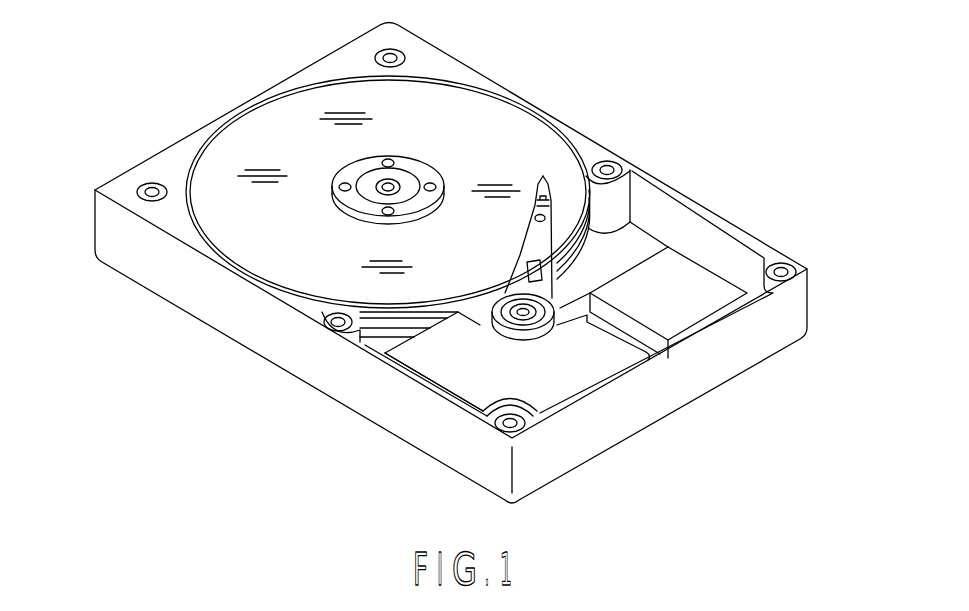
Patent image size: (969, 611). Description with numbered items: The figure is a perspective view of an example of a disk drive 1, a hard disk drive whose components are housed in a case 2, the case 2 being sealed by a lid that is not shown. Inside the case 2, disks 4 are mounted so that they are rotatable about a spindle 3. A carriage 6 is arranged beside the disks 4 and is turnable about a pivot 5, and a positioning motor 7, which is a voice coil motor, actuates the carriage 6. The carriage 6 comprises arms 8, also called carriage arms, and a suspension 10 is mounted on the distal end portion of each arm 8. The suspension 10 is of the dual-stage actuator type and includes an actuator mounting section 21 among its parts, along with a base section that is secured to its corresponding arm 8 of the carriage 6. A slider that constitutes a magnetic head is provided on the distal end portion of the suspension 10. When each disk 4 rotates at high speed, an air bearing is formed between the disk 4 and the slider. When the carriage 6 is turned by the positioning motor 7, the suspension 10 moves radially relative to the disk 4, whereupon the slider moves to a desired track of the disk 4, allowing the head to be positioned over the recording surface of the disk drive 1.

The disk drive 1 is at (707, 98).
The case 2 is at (270, 350).
The spindle 3 is at (400, 175).
The disk 4 is at (490, 123).
The pivot 5 is at (528, 322).
The carriage 6 is at (577, 258).
The positioning motor 7 is at (455, 385).
The arm 8 is at (546, 280).
The suspension 10 is at (538, 181).
The actuator mounting section 21 is at (535, 203).